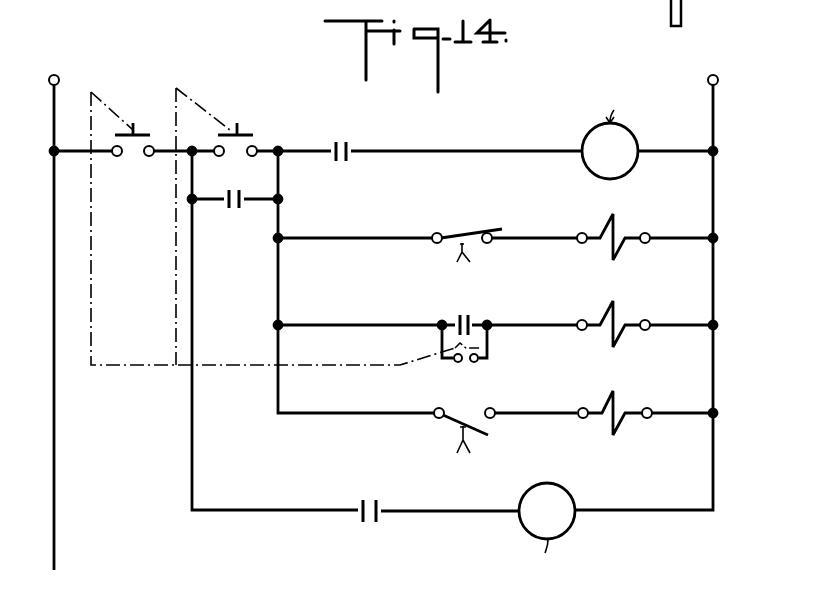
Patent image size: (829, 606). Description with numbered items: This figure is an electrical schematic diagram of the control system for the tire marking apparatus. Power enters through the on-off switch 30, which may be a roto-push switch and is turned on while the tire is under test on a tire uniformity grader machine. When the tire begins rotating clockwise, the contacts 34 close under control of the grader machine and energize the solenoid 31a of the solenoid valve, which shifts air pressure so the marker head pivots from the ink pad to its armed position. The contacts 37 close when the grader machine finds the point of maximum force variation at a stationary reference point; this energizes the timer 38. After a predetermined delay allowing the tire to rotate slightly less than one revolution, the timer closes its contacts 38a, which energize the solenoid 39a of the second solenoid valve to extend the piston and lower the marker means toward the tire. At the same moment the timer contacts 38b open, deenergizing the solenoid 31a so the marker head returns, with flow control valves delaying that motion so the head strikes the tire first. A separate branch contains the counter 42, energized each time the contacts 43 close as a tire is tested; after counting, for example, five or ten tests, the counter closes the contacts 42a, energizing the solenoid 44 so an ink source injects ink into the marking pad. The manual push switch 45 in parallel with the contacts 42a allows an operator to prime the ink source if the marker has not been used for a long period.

The on-off switch 30 is at (138, 128).
The contacts 37 is at (345, 164).
The contacts 34 is at (230, 213).
The timer 38 is at (585, 133).
The contacts of the timer 38b is at (496, 229).
The solenoid 31a is at (619, 252).
The contacts 42a is at (470, 310).
The manual push switch 45 is at (486, 347).
The solenoid 44 is at (619, 340).
The contacts of the timer 38a is at (490, 436).
The solenoid 39a is at (618, 430).
The contacts 43 is at (360, 500).
The counter 42 is at (572, 496).